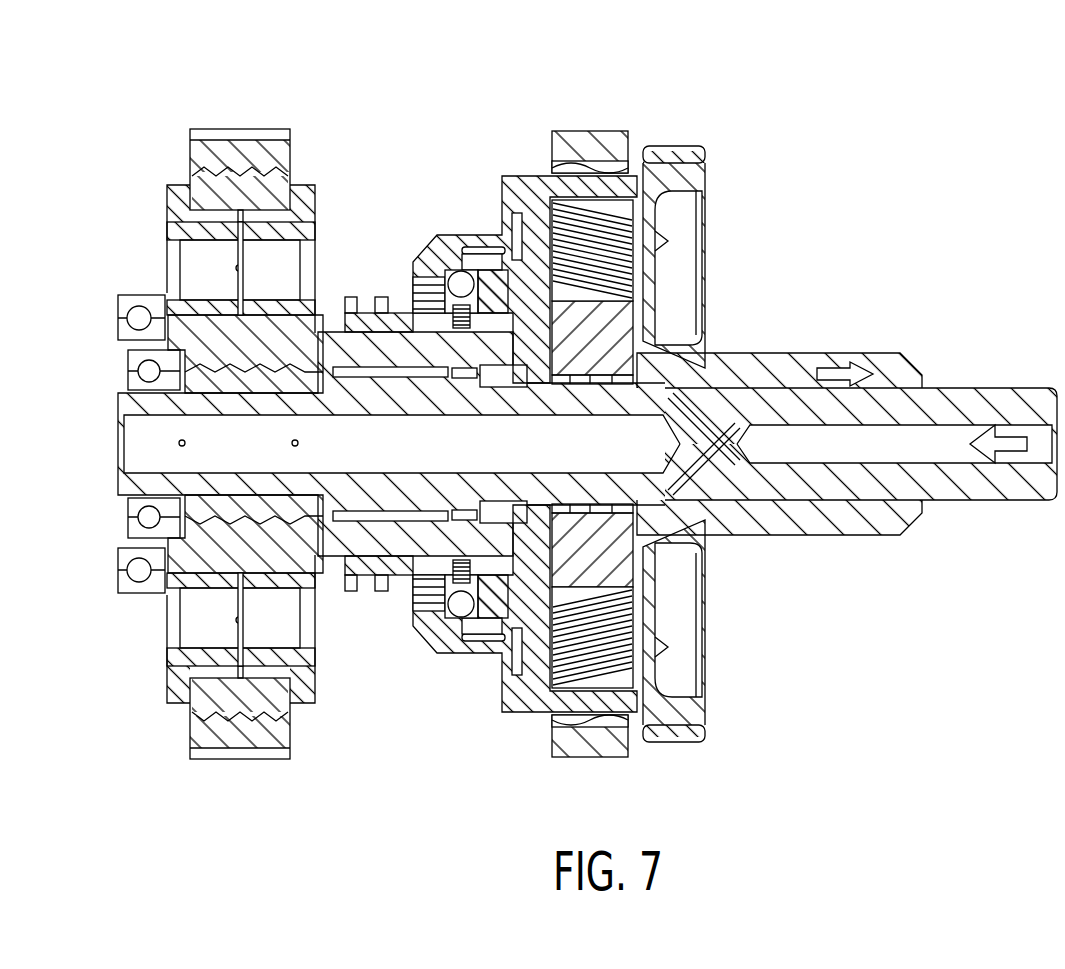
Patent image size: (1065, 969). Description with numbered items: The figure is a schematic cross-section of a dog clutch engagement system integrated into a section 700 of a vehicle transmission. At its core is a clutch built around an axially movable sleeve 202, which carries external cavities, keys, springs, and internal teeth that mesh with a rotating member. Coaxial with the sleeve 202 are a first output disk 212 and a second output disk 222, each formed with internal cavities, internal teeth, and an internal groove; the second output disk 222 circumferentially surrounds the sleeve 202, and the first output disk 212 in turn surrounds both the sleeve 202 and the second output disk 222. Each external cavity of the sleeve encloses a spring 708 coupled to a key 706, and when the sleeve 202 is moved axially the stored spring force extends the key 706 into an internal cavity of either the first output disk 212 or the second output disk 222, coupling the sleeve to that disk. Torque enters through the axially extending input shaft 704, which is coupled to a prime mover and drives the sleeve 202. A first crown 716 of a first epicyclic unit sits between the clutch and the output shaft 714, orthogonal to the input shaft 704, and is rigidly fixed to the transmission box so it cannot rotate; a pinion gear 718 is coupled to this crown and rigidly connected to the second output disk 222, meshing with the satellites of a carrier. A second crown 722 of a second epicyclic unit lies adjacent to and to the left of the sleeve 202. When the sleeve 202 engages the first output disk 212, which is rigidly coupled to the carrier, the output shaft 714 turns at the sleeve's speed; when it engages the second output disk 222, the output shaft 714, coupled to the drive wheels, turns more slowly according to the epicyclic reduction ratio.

The section of a transmission 700 is at (843, 92).
The input shaft 704 is at (1045, 388).
The key 706 is at (440, 610).
The spring 708 is at (463, 560).
The output shaft 714 is at (695, 147).
The first crown 716 is at (560, 135).
The pinion gear 718 is at (605, 356).
The second crown 722 is at (195, 163).
The sleeve 202 is at (381, 300).
The first output disk 212 is at (433, 240).
The second output disk 222 is at (487, 250).